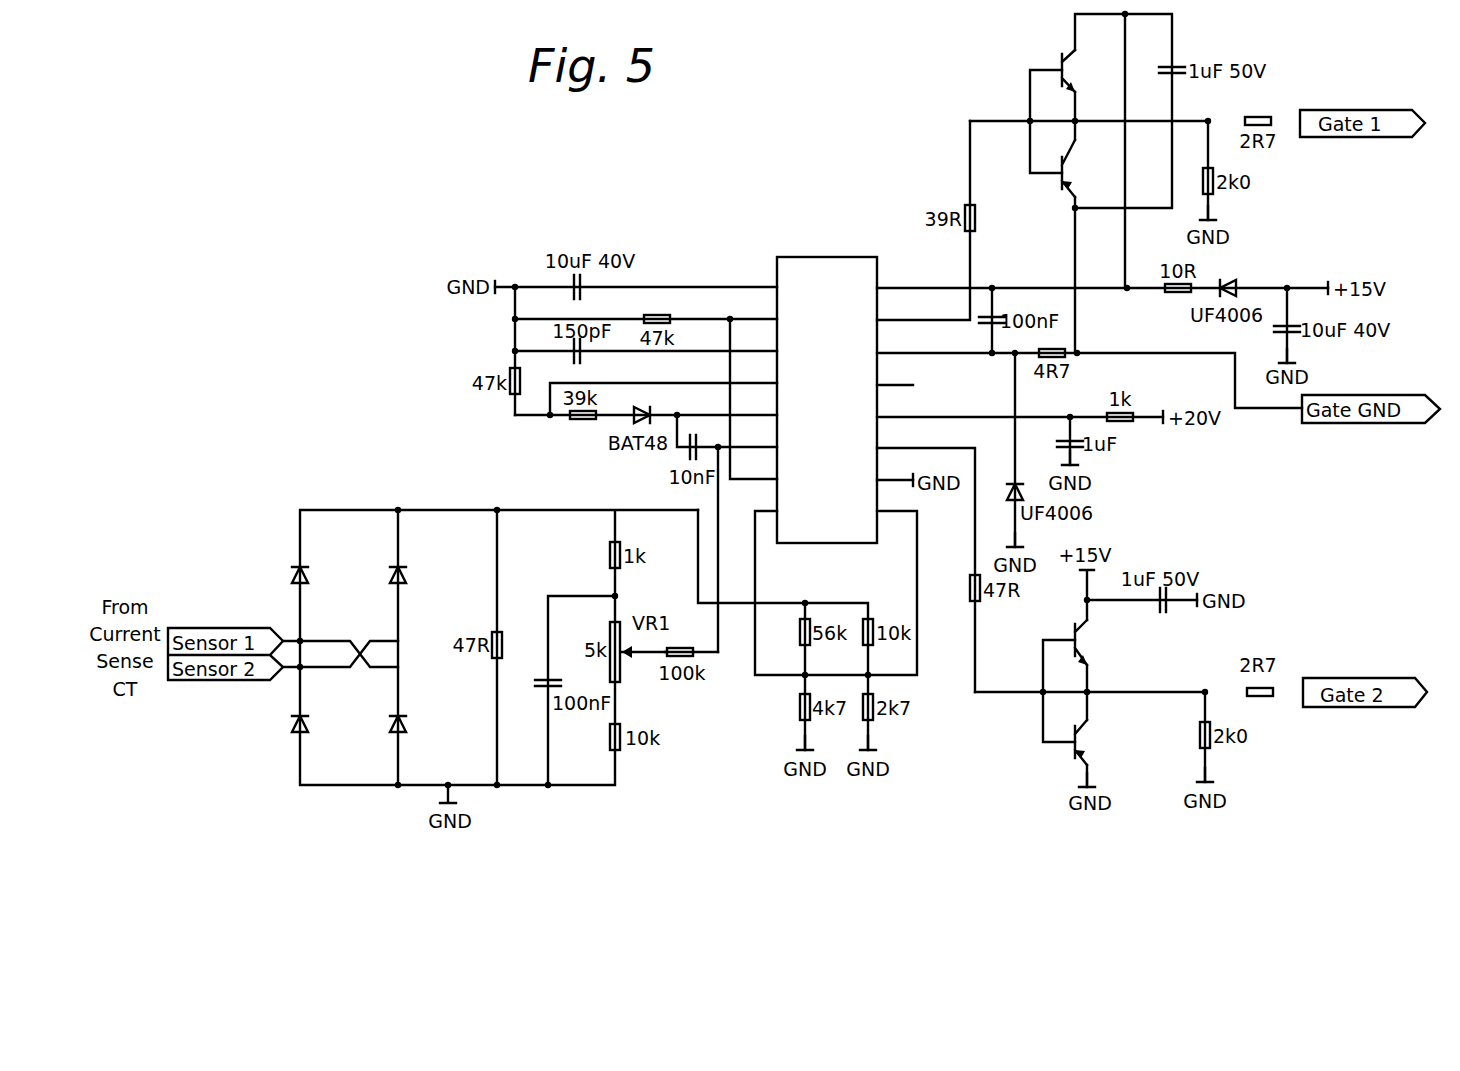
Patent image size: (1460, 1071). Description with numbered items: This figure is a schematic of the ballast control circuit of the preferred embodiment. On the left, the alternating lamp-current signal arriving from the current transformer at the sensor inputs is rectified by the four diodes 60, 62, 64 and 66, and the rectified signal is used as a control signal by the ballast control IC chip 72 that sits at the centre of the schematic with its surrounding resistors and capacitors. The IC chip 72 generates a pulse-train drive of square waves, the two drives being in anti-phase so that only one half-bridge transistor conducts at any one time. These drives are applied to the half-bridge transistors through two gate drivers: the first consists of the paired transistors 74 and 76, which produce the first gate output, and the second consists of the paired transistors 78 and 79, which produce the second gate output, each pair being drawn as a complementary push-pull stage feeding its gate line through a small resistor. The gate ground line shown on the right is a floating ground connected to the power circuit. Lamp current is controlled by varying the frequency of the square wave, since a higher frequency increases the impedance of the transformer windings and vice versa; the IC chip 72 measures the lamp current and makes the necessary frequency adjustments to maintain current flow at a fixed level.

The diode 60 is at (300, 566).
The diode 62 is at (300, 736).
The diode 64 is at (397, 566).
The diode 66 is at (398, 738).
The ballast control IC chip 72 is at (825, 257).
The first paired transistor 74 is at (1060, 69).
The first paired transistor 76 is at (1060, 180).
The second paired transistor 78 is at (1073, 640).
The second paired transistor 79 is at (1073, 752).